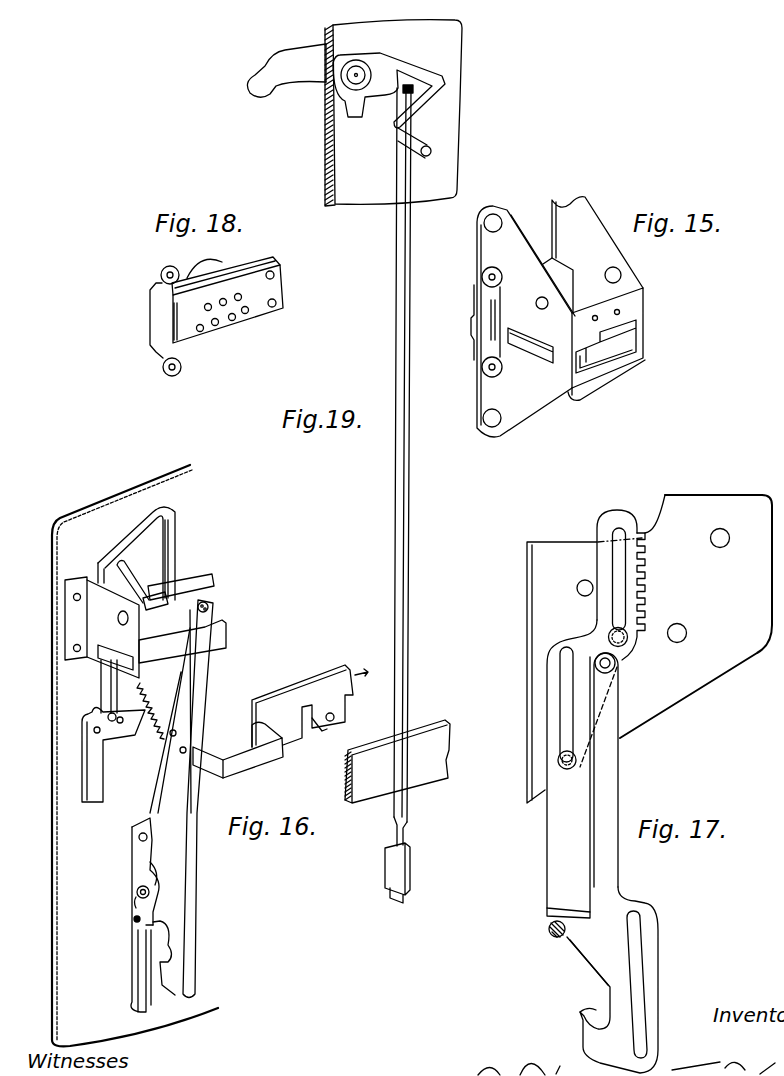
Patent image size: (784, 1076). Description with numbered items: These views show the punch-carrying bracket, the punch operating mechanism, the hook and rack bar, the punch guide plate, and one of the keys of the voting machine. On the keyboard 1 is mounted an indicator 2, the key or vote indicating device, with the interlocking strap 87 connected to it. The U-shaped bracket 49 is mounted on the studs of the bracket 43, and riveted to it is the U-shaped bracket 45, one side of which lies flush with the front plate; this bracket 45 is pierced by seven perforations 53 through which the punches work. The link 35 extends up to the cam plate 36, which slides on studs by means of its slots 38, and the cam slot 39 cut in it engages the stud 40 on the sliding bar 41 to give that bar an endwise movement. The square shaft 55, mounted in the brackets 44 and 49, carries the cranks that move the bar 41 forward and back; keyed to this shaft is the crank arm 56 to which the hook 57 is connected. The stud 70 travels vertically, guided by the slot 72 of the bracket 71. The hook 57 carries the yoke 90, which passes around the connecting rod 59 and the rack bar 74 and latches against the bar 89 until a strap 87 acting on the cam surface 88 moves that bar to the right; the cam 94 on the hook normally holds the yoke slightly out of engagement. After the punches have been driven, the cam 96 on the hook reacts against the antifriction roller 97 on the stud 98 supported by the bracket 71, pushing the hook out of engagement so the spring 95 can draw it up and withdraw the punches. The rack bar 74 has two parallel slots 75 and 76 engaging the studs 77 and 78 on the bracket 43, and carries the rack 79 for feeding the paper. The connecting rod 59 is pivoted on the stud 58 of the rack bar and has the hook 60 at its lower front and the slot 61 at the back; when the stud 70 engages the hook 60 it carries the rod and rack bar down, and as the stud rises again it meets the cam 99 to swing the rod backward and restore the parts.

In FIG. 19, the keyboard 1 is at (460, 76).
In FIG. 16, the keyboard 1 is at (50, 700).
In FIG. 19, the indicator 2 is at (382, 72).
In FIG. 19, the interlocking strap 87 is at (398, 265).
In FIG. 18, the U-shaped bracket 45 is at (197, 338).
In FIG. 15, the U-shaped bracket 45 is at (473, 313).
In FIG. 18, the perforation 53 is at (232, 317).
In FIG. 15, the U-shaped bracket 49 is at (617, 267).
In FIG. 16, the cam plate 36 is at (130, 540).
In FIG. 16, the slot 38 is at (168, 522).
In FIG. 16, the cam slot 39 is at (124, 566).
In FIG. 16, the stud 40 is at (160, 607).
In FIG. 16, the crank arm 56 is at (216, 595).
In FIG. 16, the bracket 44 is at (73, 614).
In FIG. 16, the square shaft 55 is at (119, 618).
In FIG. 16, the sliding bar 41 is at (215, 640).
In FIG. 16, the hook 57 is at (196, 879).
In FIG. 16, the spring 95 is at (153, 723).
In FIG. 16, the link 35 is at (98, 787).
In FIG. 16, the bracket 71 is at (133, 842).
In FIG. 16, the cam 96 is at (151, 880).
In FIG. 16, the antifriction roller 97 is at (137, 889).
In FIG. 16, the stud 98 is at (135, 897).
In FIG. 16, the stud 70 is at (137, 923).
In FIG. 17, the stud 70 is at (551, 933).
In FIG. 16, the cam 94 is at (153, 950).
In FIG. 16, the slot 72 is at (153, 940).
In FIG. 16, the bar 89 is at (277, 700).
In FIG. 16, the cam surface 88 is at (318, 733).
In FIG. 16, the yoke 90 is at (252, 765).
In FIG. 17, the bracket 43 is at (675, 695).
In FIG. 17, the rack 79 is at (647, 576).
In FIG. 17, the rack bar 74 is at (552, 822).
In FIG. 17, the slot 75 is at (567, 697).
In FIG. 17, the stud 77 is at (558, 766).
In FIG. 17, the slot 76 is at (619, 535).
In FIG. 17, the stud 78 is at (626, 631).
In FIG. 17, the connecting rod 59 is at (612, 790).
In FIG. 17, the stud 58 is at (617, 668).
In FIG. 17, the cam 99 is at (585, 962).
In FIG. 17, the slot 61 is at (637, 980).
In FIG. 17, the hook 60 is at (581, 1013).